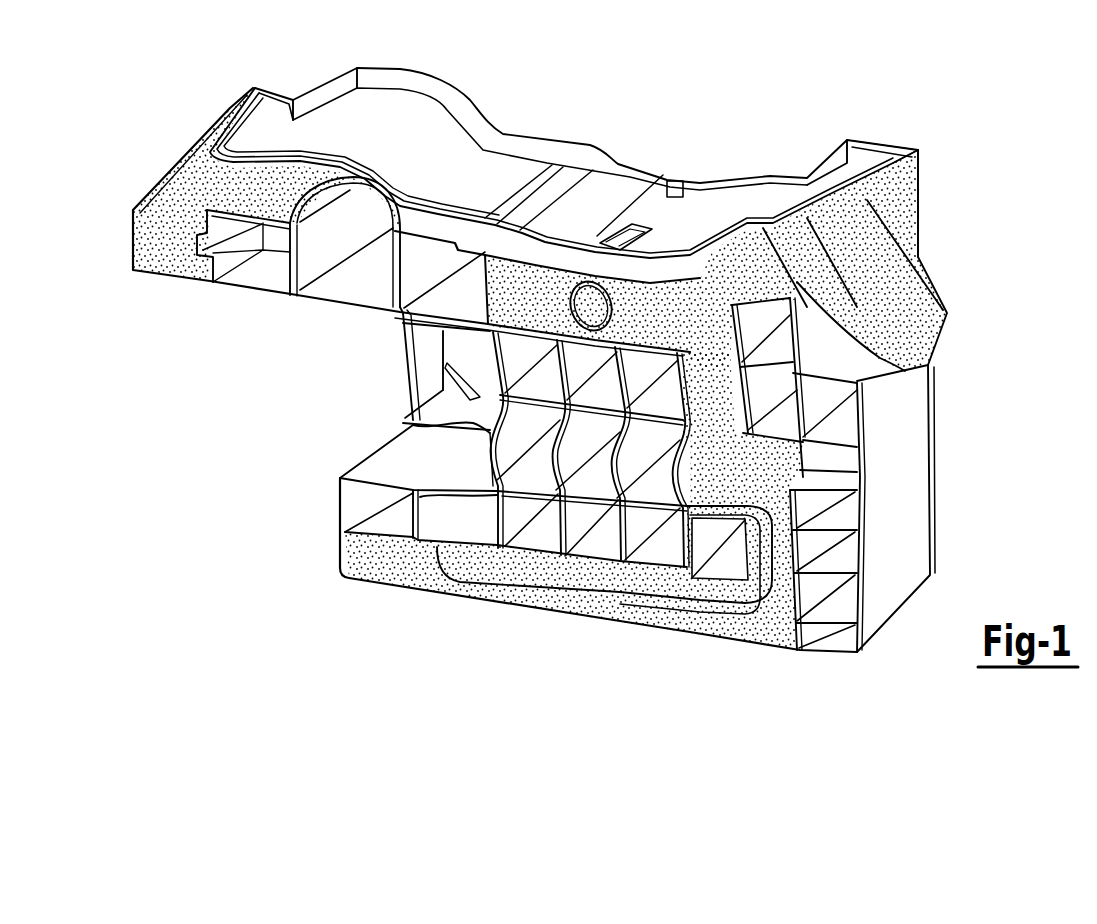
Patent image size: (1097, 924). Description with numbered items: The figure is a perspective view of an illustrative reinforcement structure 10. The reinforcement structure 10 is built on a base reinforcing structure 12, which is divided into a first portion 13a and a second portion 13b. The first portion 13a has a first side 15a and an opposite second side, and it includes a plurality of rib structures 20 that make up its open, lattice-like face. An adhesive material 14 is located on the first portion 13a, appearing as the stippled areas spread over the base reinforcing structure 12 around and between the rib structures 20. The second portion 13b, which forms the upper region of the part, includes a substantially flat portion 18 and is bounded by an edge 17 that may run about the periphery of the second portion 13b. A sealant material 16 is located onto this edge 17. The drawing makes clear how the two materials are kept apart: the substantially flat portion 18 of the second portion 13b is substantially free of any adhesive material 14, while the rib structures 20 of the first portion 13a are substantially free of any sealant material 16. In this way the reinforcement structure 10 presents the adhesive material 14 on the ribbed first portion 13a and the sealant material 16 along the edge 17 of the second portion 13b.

The reinforcement structure 10 is at (1004, 193).
The base reinforcing structure 12 is at (908, 512).
The first portion 13a is at (960, 180).
The second portion 13b is at (346, 33).
The adhesive material 14 is at (867, 272).
The first side 15a is at (813, 712).
The sealant material 16 is at (903, 181).
The edge 17 is at (690, 232).
The substantially flat portion 18 is at (423, 157).
The rib structures 20 is at (413, 427).